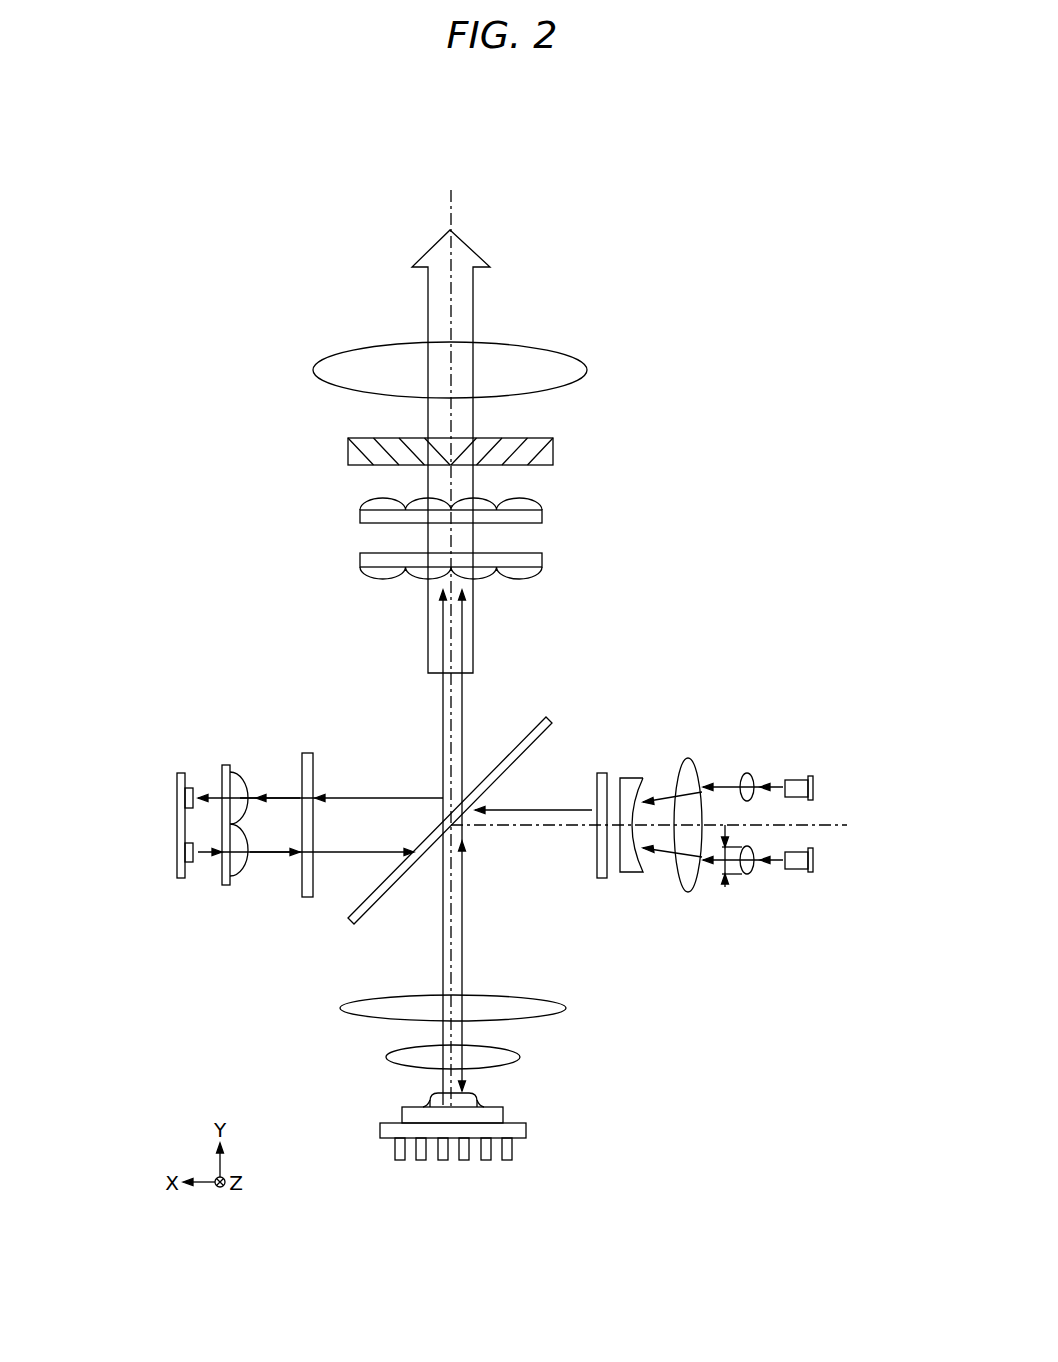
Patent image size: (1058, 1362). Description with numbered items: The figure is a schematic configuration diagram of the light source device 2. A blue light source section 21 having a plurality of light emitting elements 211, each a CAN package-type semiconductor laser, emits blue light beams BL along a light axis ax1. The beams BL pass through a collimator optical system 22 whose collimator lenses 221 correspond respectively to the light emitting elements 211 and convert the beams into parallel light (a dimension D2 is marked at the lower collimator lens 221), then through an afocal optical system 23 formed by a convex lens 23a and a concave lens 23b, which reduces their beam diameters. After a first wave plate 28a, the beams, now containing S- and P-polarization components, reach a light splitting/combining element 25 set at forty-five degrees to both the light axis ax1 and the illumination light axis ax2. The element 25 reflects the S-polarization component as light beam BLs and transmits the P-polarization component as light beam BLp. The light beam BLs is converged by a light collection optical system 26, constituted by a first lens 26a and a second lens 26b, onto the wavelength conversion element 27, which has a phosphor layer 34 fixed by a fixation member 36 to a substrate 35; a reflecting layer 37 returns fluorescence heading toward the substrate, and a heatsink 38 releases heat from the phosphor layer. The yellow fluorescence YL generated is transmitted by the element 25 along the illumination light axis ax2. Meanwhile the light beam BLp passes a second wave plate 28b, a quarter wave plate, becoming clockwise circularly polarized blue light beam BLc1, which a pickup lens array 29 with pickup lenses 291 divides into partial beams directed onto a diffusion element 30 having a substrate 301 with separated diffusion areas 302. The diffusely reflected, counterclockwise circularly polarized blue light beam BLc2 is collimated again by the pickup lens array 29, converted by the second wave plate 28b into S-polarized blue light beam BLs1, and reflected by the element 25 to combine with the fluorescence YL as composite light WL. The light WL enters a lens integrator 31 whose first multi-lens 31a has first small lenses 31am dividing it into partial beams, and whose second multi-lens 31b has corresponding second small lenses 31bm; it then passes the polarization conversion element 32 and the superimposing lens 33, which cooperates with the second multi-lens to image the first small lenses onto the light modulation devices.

The light source device 2 is at (430, 176).
The illumination light axis ax2 is at (453, 197).
The composite light WL is at (428, 297).
The superimposing lens 33 is at (563, 354).
The polarization conversion element 32 is at (553, 456).
The lens integrator 31 is at (462, 543).
The second multi-lens 31b is at (440, 520).
The second small lenses 31bm is at (372, 503).
The first multi-lens 31a is at (443, 569).
The first small lenses 31am is at (372, 576).
The fluorescence YL is at (443, 768).
The blue light beam BLs1 is at (462, 750).
The light beam BLs is at (462, 974).
The light beam BLp is at (383, 797).
The blue light beam BLc1 is at (280, 797).
The blue light beam BLc2 is at (265, 856).
The diffusion element 30 is at (167, 803).
The substrate 301 is at (177, 808).
The diffusion areas 302 is at (191, 864).
The pickup lens array 29 is at (228, 815).
The pickup lenses 291 is at (240, 870).
The second wave plate 28b is at (308, 753).
The light splitting/combining element 25 is at (400, 878).
The light axis ax1 is at (847, 827).
The light beams BL is at (538, 810).
The first wave plate 28a is at (602, 773).
The afocal optical system 23 is at (664, 777).
The convex lens 23a is at (687, 796).
The concave lens 23b is at (635, 778).
The collimator optical system 22 is at (756, 807).
The collimator lenses 221 is at (750, 875).
The blue light source section 21 is at (830, 766).
The light emitting elements 211 is at (813, 783).
The lens diameter / pitch D2 is at (726, 873).
The light collection optical system 26 is at (520, 1037).
The first lens 26a is at (566, 1008).
The second lens 26b is at (520, 1057).
The wavelength conversion element 27 is at (470, 1141).
The fixation member 36 is at (482, 1103).
The phosphor layer 34 is at (425, 1103).
The substrate 35 is at (405, 1115).
The heatsink 38 is at (380, 1130).
The reflecting layer 37 is at (462, 1108).